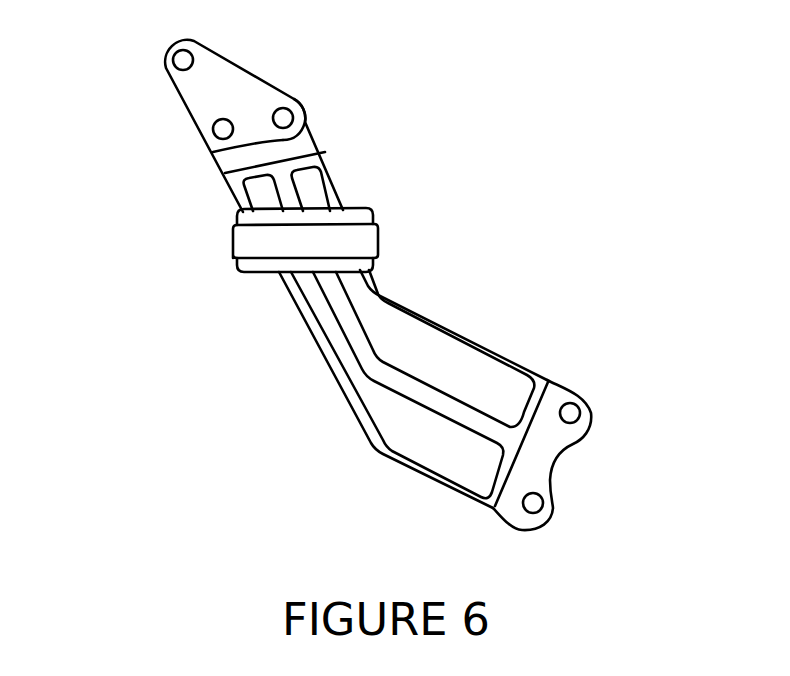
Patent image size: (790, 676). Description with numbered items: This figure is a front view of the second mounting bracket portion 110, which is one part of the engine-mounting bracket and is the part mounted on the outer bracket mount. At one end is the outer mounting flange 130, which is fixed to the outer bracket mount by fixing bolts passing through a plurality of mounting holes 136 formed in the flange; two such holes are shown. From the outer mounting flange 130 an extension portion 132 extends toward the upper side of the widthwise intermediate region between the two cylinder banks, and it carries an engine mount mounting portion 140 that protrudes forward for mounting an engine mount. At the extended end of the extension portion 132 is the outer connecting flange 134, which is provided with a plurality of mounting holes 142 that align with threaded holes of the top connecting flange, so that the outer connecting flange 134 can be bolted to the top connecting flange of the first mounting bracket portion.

The second mounting bracket portion 110 is at (530, 154).
The outer mounting flange 130 is at (551, 452).
The extension portion 132 is at (366, 348).
The outer connecting flange 134 is at (247, 83).
The mounting holes 136 is at (571, 413).
The engine mount mounting portion 140 is at (247, 245).
The mounting holes 142 is at (183, 60).